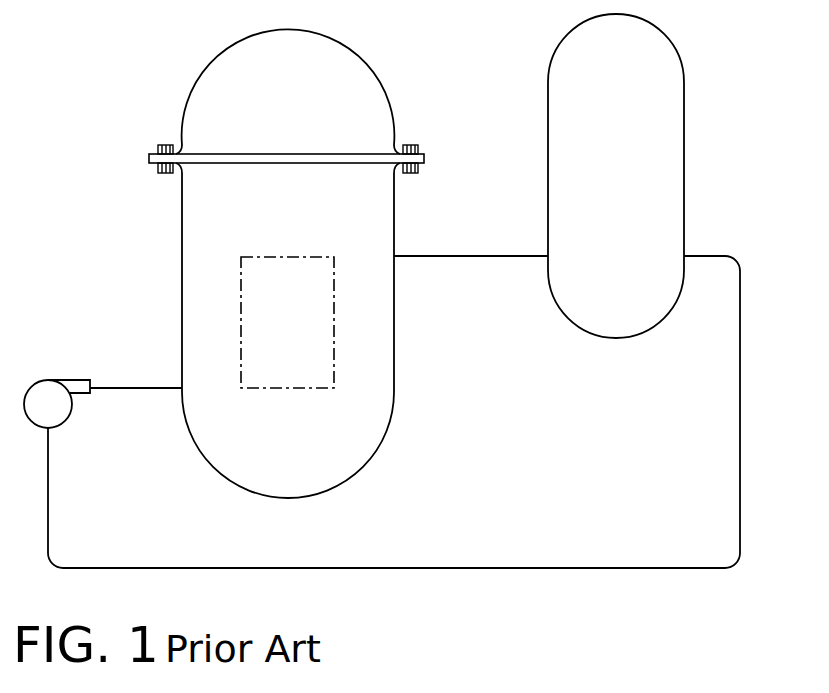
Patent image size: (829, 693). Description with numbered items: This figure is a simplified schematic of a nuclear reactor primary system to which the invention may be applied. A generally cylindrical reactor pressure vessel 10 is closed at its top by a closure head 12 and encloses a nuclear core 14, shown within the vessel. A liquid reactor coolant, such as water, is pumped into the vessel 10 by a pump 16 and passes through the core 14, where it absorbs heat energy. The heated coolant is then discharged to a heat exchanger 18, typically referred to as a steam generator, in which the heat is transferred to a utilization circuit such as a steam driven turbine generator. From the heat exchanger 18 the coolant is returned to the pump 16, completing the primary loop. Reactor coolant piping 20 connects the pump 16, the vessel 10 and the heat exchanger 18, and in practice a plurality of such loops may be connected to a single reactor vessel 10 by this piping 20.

The reactor pressure vessel 10 is at (269, 334).
The closure head 12 is at (194, 103).
The nuclear core 14 is at (241, 311).
The pump 16 is at (45, 380).
The heat exchanger 18 is at (685, 117).
The reactor coolant piping 20 is at (740, 500).